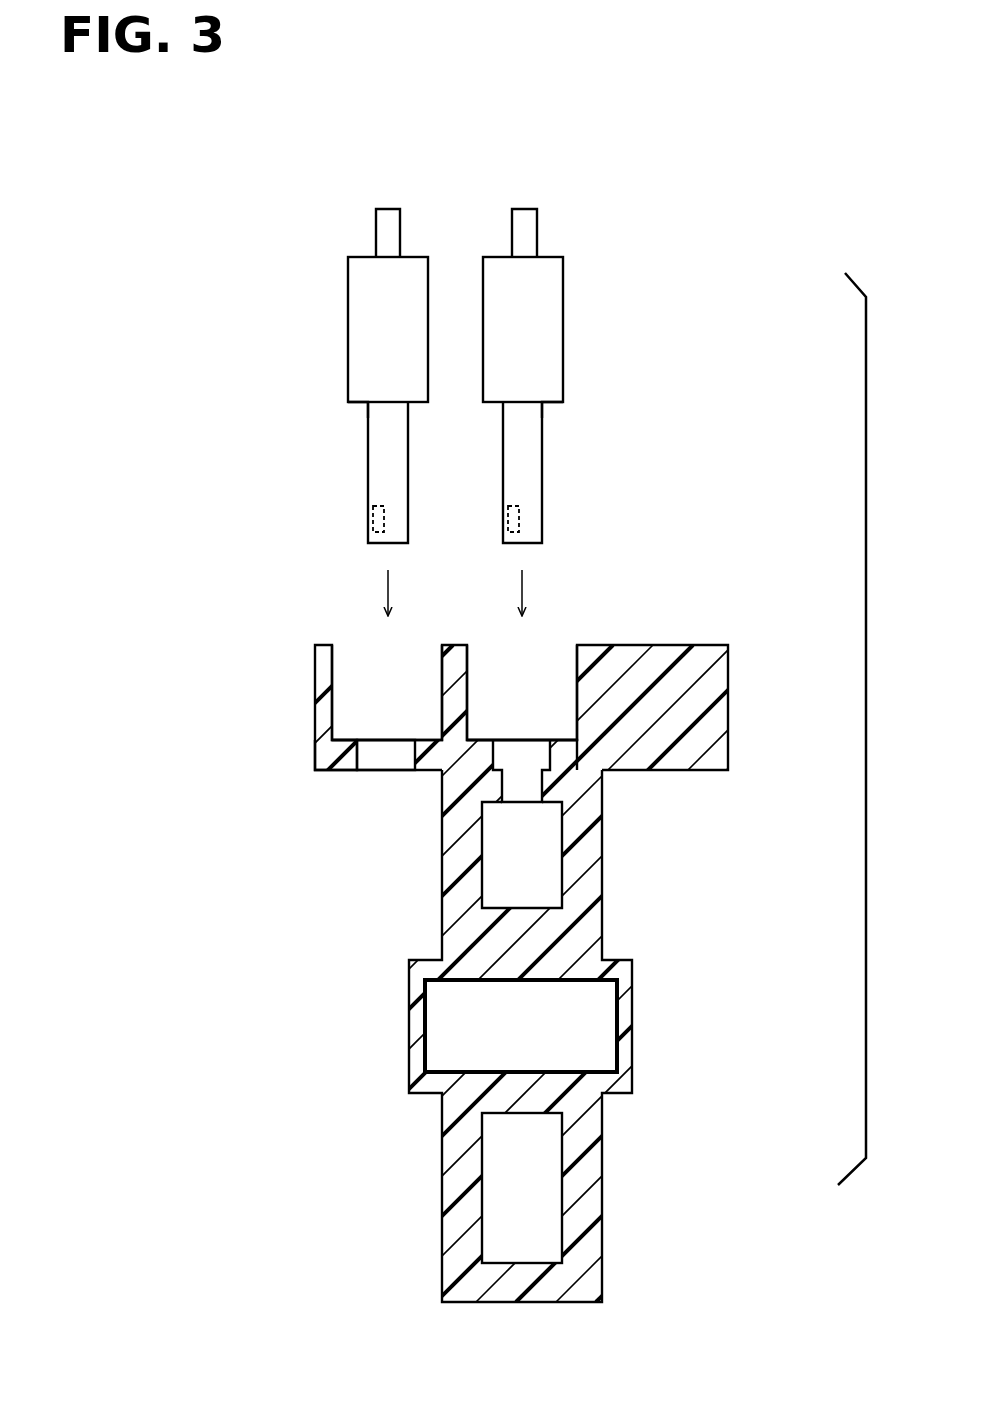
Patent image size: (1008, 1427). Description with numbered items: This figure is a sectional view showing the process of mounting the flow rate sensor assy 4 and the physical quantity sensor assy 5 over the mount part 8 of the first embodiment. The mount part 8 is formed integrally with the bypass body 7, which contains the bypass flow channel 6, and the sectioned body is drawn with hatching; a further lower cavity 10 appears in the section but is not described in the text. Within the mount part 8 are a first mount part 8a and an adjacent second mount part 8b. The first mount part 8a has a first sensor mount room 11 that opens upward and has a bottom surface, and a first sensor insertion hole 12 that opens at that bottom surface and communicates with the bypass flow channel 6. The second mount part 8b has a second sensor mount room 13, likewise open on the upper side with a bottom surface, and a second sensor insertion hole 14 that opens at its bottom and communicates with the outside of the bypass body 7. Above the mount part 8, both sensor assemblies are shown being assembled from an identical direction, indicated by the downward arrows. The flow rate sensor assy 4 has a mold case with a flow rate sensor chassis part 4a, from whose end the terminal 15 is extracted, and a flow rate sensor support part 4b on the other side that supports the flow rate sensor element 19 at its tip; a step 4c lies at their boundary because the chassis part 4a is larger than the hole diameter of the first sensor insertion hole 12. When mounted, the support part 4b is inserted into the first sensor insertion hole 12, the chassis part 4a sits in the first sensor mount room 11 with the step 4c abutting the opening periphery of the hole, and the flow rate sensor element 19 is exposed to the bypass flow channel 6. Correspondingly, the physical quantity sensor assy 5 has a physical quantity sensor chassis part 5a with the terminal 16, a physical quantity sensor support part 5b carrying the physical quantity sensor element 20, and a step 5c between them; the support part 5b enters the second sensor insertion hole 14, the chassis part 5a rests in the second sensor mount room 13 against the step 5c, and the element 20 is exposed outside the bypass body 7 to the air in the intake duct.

The flow rate sensor assy 4 is at (590, 242).
The flow rate sensor chassis part 4a is at (543, 312).
The flow rate sensor support part 4b is at (532, 462).
The step 4c is at (558, 403).
The physical quantity sensor assy 5 is at (322, 247).
The physical quantity sensor chassis part 5a is at (368, 313).
The physical quantity sensor support part 5b is at (382, 455).
The step 5c is at (362, 403).
The bypass flow channel 6 is at (522, 1008).
The bypass body 7 is at (453, 942).
The mount part 8 is at (687, 672).
The first mount part 8a is at (558, 753).
The second mount part 8b is at (348, 755).
The lower cavity 10 is at (540, 1203).
The first sensor mount room 11 is at (510, 714).
The first sensor insertion hole 12 is at (537, 755).
The second sensor mount room 13 is at (373, 714).
The second sensor insertion hole 14 is at (382, 758).
The terminal 15 is at (523, 222).
The terminal 16 is at (387, 218).
The flow rate sensor element 19 is at (506, 520).
The physical quantity sensor element 20 is at (370, 520).